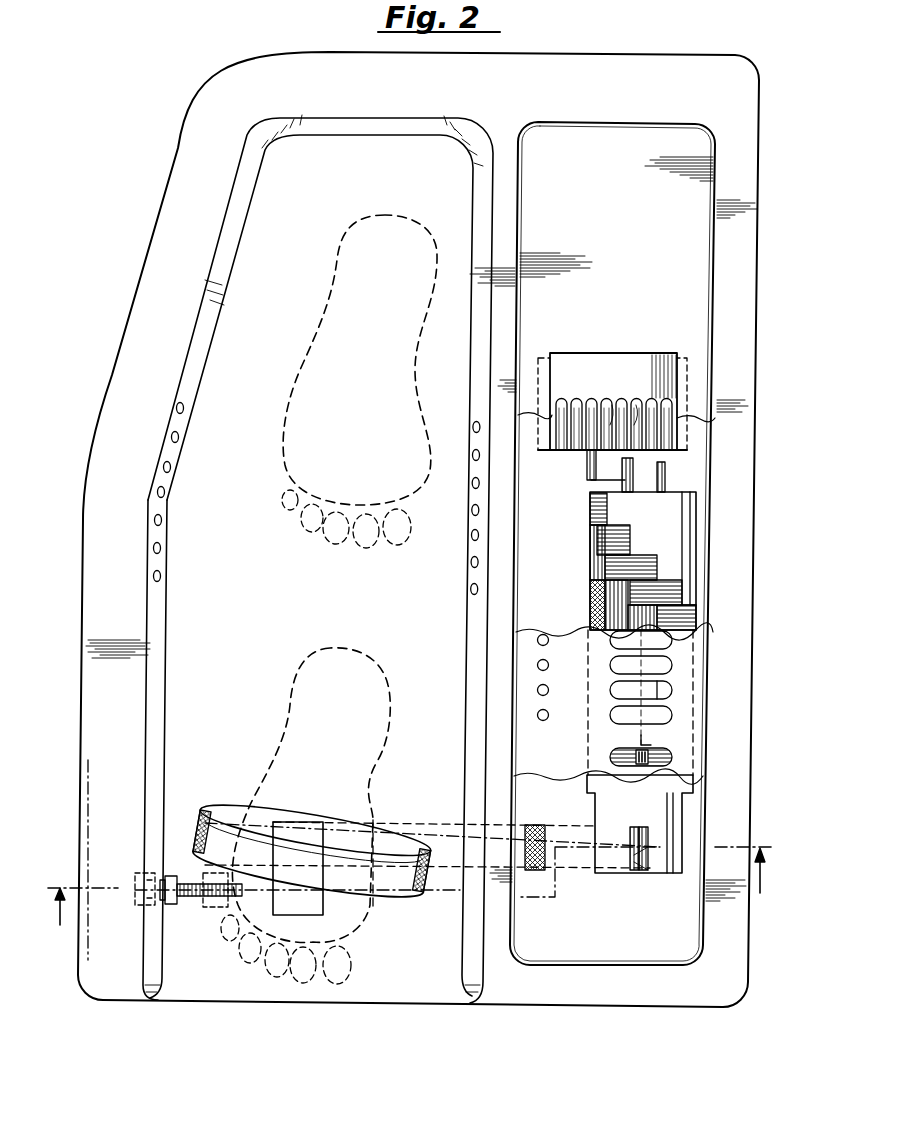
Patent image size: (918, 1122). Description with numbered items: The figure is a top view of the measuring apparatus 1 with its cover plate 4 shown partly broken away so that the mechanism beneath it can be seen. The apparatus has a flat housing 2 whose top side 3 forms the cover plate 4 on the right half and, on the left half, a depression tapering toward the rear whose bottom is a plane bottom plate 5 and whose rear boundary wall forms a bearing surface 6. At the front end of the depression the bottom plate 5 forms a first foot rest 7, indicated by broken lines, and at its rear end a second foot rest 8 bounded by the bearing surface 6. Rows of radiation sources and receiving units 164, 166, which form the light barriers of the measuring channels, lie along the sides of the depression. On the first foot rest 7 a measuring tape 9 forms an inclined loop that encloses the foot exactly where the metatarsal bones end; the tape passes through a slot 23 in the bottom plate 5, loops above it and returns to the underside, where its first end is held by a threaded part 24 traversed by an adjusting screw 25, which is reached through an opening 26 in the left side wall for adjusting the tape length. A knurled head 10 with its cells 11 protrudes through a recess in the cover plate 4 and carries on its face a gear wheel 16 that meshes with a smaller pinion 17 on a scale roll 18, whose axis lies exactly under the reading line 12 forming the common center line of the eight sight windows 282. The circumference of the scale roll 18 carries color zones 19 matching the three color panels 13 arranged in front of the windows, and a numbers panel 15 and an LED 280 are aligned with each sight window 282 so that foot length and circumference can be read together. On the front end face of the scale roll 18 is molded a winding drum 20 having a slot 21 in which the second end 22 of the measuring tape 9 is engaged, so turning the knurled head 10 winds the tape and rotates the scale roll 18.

The measuring apparatus 1 is at (192, 48).
The housing 2 is at (250, 62).
The housing top side 3 is at (203, 160).
The cover plate 4 is at (690, 268).
The bottom plate 5 is at (246, 280).
The bearing surface 6 is at (396, 130).
The first foot rest 7 is at (326, 766).
The second foot rest 8 is at (365, 392).
The measuring tape 9 is at (228, 812).
The knurled head 10 is at (578, 365).
The battery cells 11 is at (612, 408).
The reading line 12 is at (650, 745).
The color panels 13 is at (612, 760).
The numbers panel 15 is at (572, 612).
The gear wheel 16 is at (597, 468).
The pinion 17 is at (665, 478).
The scale roll 18 is at (700, 565).
The color zones 19 is at (590, 518).
The winding drum 20 is at (676, 875).
The slot 21 is at (632, 868).
The second end 22 is at (650, 872).
The slot 23 is at (300, 895).
The nut 24 is at (215, 912).
The adjusting screw 25 is at (150, 870).
The opening 26 is at (88, 900).
The radiation source unit 164 is at (178, 437).
The receiving unit 166 is at (478, 535).
The LED 280 is at (536, 745).
The sight windows 282 is at (672, 640).